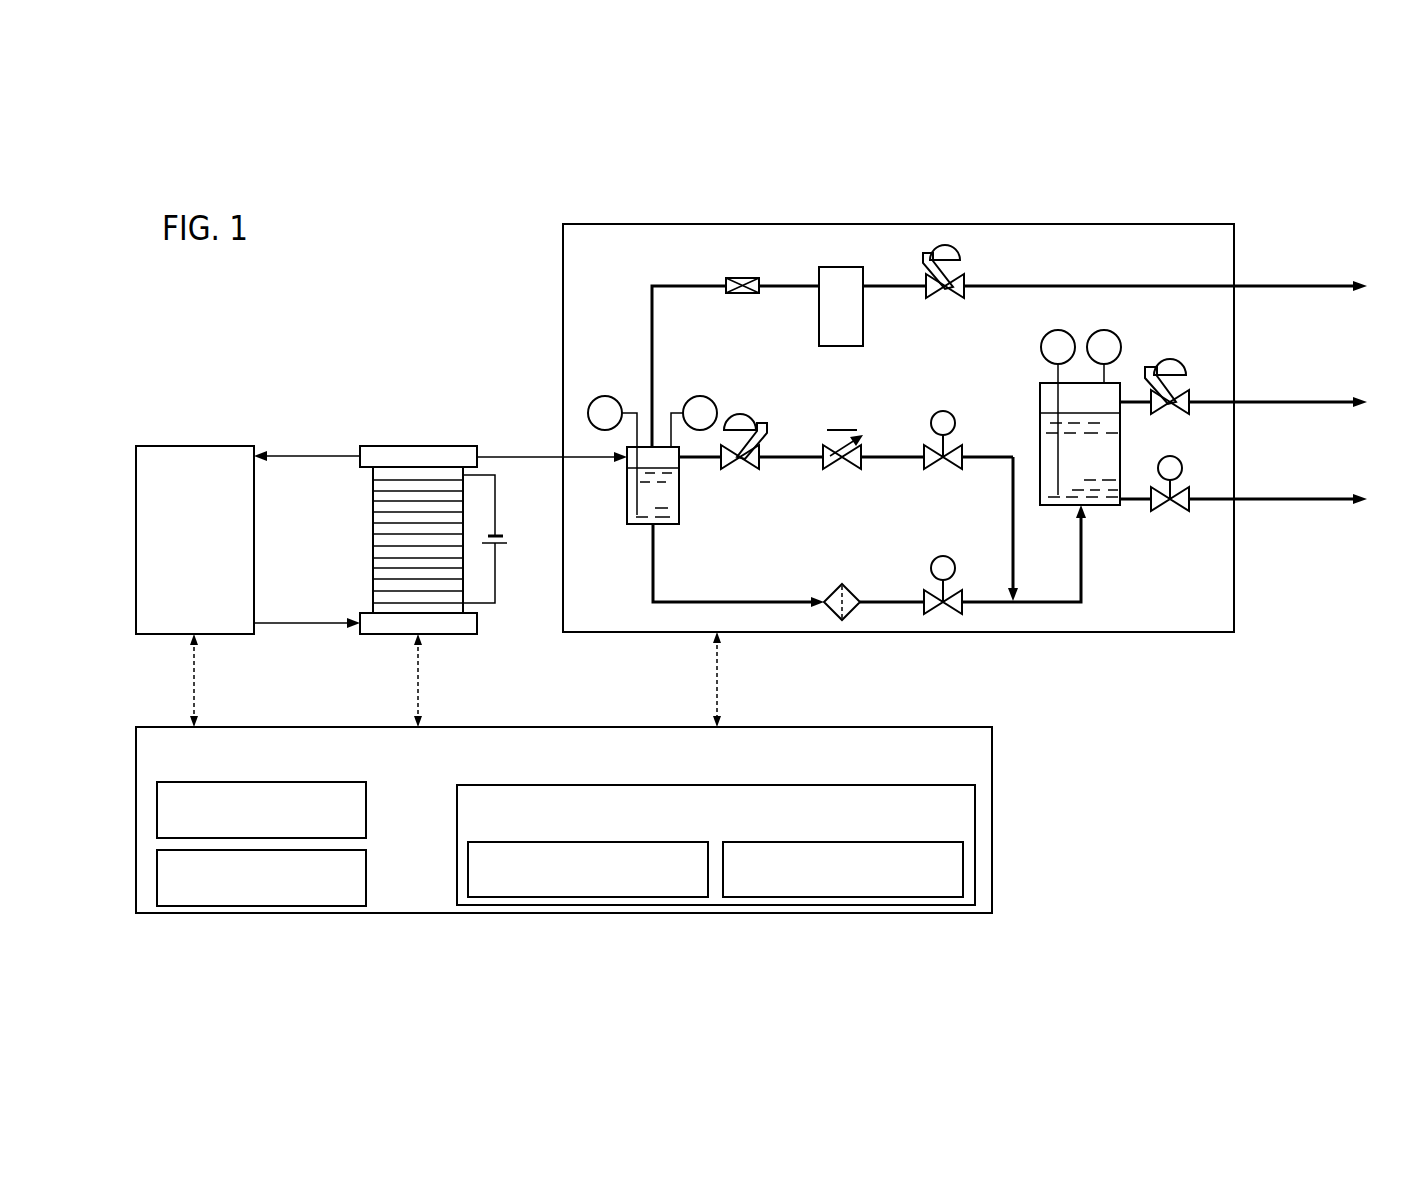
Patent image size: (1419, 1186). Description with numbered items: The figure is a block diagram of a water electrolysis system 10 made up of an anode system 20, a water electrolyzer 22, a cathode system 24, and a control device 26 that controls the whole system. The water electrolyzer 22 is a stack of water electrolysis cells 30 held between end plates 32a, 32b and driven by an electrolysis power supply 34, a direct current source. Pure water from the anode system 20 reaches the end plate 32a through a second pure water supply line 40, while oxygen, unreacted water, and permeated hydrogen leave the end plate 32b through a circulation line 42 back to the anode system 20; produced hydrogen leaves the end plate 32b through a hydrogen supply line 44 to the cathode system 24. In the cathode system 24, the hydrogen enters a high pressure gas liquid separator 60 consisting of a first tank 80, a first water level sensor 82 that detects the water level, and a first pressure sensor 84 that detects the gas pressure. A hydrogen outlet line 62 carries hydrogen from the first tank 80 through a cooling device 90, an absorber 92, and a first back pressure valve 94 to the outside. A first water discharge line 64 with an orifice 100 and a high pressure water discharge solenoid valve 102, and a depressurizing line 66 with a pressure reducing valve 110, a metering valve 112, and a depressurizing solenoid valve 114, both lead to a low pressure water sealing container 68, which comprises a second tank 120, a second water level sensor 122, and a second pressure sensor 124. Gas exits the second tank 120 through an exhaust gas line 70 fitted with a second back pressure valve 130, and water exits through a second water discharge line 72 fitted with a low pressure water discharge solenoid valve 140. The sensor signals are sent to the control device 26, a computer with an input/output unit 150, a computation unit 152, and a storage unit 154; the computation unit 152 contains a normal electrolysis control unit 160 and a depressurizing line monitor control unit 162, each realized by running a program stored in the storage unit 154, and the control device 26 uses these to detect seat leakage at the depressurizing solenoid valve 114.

The water electrolysis system 10 is at (324, 294).
The anode system 20 is at (156, 445).
The water electrolyzer 22 is at (402, 527).
The cathode system 24 is at (562, 226).
The control device 26 is at (226, 726).
The water electrolysis cell 30 is at (375, 508).
The end plate 32a is at (385, 635).
The end plate 32b is at (382, 445).
The electrolysis power supply 34 is at (497, 547).
The second pure water supply line 40 is at (305, 628).
The circulation line 42 is at (305, 462).
The hydrogen supply line 44 is at (528, 463).
The high pressure gas liquid separator 60 is at (624, 531).
The hydrogen outlet line 62 is at (682, 290).
The first water discharge line 64 is at (716, 598).
The depressurizing line 66 is at (990, 456).
The low pressure water sealing container 68 is at (1109, 514).
The exhaust gas line 70 is at (1205, 398).
The second water discharge line 72 is at (1207, 497).
The first tank 80 is at (682, 492).
The first water level sensor 82 is at (605, 395).
The first pressure sensor 84 is at (700, 395).
The cooling device 90 is at (748, 296).
The absorber 92 is at (865, 311).
The first back pressure valve 94 is at (964, 251).
The orifice 100 is at (833, 587).
The high pressure water discharge solenoid valve 102 is at (949, 557).
The pressure reducing valve 110 is at (748, 415).
The metering valve 112 is at (851, 430).
The depressurizing solenoid valve 114 is at (950, 412).
The second tank 120 is at (1122, 445).
The second water level sensor 122 is at (1043, 337).
The second pressure sensor 124 is at (1115, 333).
The second back pressure valve 130 is at (1173, 358).
The low pressure water discharge solenoid valve 140 is at (1159, 506).
The input/output unit 150 is at (369, 797).
The computation unit 152 is at (699, 784).
The storage unit 154 is at (369, 863).
The normal electrolysis control unit 160 is at (512, 841).
The depressurizing line monitor control unit 162 is at (927, 841).